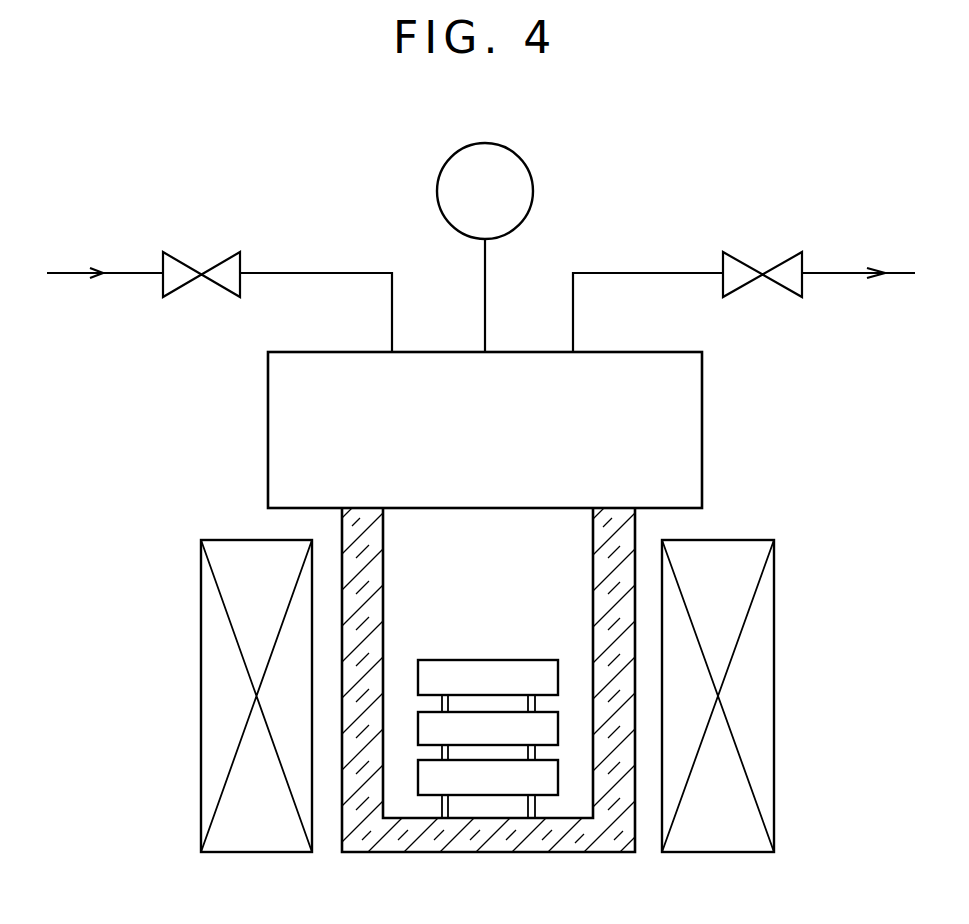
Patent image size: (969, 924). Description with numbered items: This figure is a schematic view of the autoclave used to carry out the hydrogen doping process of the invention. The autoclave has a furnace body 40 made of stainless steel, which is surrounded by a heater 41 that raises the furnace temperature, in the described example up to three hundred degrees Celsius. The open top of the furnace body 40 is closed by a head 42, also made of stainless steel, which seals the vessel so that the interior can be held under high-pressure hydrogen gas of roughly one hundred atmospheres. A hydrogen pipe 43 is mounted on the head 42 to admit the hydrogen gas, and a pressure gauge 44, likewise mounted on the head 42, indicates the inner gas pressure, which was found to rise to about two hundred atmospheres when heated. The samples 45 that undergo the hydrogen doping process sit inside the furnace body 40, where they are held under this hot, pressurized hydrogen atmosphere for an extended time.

The furnace body 40 is at (342, 530).
The heater 41 is at (201, 645).
The head 42 is at (702, 447).
The hydrogen pipe 43 is at (297, 273).
The pressure gauge 44 is at (485, 143).
The samples 45 is at (488, 660).